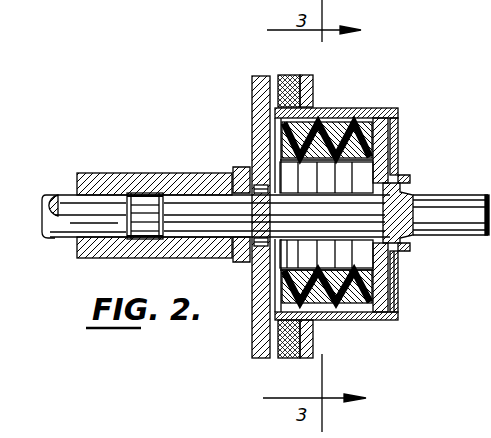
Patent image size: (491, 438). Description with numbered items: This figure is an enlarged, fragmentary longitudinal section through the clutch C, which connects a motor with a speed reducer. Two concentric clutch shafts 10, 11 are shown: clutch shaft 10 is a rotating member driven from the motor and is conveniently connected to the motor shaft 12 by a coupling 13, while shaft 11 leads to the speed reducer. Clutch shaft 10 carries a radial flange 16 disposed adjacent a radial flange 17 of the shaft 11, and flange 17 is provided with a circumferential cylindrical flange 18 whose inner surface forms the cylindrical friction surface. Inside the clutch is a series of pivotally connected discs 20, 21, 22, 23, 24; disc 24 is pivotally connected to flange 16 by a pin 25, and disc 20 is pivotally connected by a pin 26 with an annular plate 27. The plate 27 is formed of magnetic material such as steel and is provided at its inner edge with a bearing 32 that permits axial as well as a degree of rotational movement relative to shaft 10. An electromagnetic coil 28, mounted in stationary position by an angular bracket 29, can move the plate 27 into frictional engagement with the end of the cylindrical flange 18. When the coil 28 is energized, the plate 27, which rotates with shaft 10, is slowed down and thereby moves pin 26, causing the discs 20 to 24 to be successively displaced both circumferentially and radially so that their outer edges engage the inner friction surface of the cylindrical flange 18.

The clutch shaft 10 is at (182, 208).
The clutch shaft 11 is at (444, 197).
The motor shaft 12 is at (62, 200).
The coupling 13 is at (118, 173).
The radial flange 16 is at (378, 139).
The radial flange 17 is at (397, 268).
The cylindrical flange 18 is at (352, 110).
The disc 20 is at (287, 246).
The disc 21 is at (306, 245).
The disc 22 is at (326, 253).
The disc 23 is at (347, 247).
The disc 24 is at (362, 177).
The pin 25 is at (388, 295).
The pin 26 is at (262, 136).
The annular plate 27 is at (253, 80).
The electromagnetic coil 28 is at (283, 76).
The angular bracket 29 is at (311, 84).
The bearing 32 is at (240, 167).
The clutch C is at (384, 102).